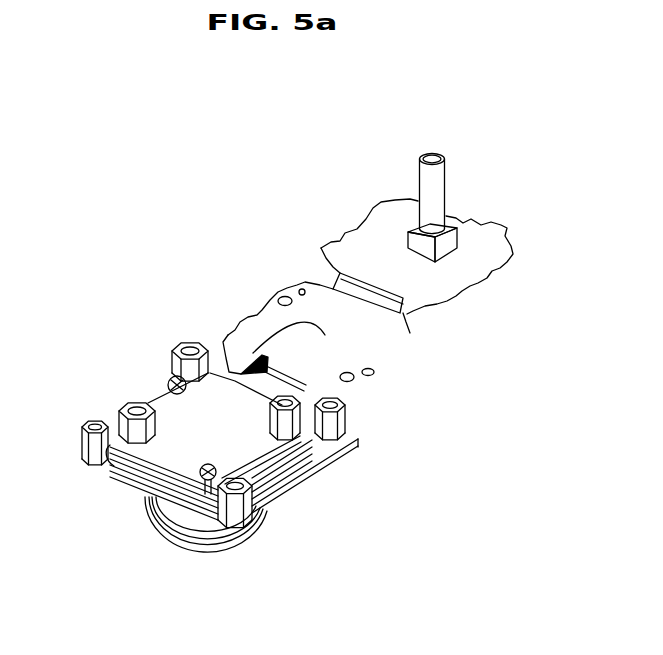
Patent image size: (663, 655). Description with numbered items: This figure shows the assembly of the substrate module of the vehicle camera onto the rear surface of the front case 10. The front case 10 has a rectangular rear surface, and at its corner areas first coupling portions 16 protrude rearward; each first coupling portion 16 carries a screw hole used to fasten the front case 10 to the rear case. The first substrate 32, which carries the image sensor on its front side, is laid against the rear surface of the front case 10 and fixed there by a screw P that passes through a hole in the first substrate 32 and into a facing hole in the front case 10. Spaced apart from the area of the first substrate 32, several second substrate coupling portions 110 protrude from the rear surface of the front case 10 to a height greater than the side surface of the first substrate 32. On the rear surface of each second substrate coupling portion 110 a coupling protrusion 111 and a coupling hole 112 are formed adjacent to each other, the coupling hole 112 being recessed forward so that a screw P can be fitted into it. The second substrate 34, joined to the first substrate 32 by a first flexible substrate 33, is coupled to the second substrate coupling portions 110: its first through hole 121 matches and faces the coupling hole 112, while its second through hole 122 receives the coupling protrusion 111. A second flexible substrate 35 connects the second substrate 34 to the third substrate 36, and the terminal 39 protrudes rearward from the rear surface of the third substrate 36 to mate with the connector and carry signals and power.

The front case 10 is at (106, 472).
The first coupling portion 16 is at (238, 503).
The first substrate 32 is at (168, 391).
The first flexible substrate 33 is at (235, 368).
The second substrate 34 is at (262, 308).
The second flexible substrate 35 is at (352, 290).
The third substrate 36 is at (367, 235).
The terminal 39 is at (442, 183).
The screw P is at (182, 408).
The second substrate coupling portion 110 is at (300, 427).
The coupling protrusion 111 is at (126, 412).
The coupling hole 112 is at (137, 407).
The first through hole 121 is at (367, 373).
The second through hole 122 is at (358, 388).